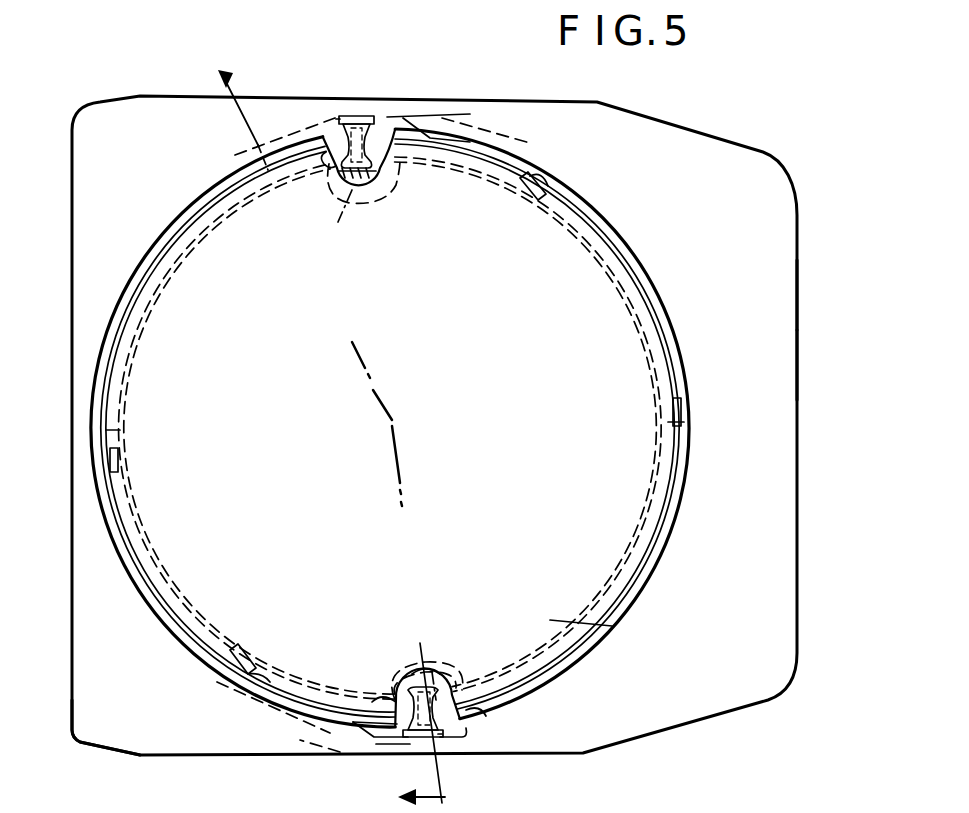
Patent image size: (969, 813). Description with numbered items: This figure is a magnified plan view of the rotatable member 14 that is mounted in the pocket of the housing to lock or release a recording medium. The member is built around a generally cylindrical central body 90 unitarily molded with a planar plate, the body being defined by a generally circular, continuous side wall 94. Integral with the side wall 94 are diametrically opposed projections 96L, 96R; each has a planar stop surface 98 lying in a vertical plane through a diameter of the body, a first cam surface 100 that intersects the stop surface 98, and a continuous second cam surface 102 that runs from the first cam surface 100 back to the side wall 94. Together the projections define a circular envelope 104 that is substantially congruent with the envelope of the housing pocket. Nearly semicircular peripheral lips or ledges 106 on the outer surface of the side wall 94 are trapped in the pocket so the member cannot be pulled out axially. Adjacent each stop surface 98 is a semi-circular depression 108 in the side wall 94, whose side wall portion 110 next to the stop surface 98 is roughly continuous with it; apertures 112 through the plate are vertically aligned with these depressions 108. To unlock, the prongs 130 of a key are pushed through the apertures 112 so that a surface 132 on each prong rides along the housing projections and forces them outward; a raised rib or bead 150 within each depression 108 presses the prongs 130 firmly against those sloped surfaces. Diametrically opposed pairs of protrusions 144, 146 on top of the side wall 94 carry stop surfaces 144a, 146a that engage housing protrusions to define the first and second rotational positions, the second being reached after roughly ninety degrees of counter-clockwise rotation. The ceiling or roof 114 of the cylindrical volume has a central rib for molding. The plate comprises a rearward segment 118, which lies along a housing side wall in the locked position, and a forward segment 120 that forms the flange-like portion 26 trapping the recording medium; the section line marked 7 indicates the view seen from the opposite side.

The rotatable member 14 is at (690, 727).
The flange-like portion 26 is at (819, 295).
The forward segment 120 is at (752, 328).
The rearward segment 118 is at (84, 707).
The cylindrical central body 90 is at (620, 232).
The side wall 94 is at (671, 468).
The peripheral sector lips or ledges 106 is at (668, 318).
The protrusions 144 is at (666, 402).
The stop surfaces 144a is at (673, 427).
The protrusions 146 is at (240, 650).
The stop surfaces 146a is at (258, 668).
The stop surface 98 is at (388, 118).
The apertures 112 is at (366, 190).
The depression 108 is at (318, 180).
The prongs 130 is at (440, 700).
The surface 132 is at (360, 116).
The circular envelope 104 is at (320, 124).
The second cam surface 102 is at (470, 120).
The projection 96L is at (428, 134).
The projection 96R is at (356, 736).
The first cam surface 100 is at (386, 746).
The side wall portion 110 is at (390, 686).
The raised rib or bead 150 is at (428, 672).
The ceiling or roof 114 is at (606, 626).
The section line 7- 7 is at (228, 78).